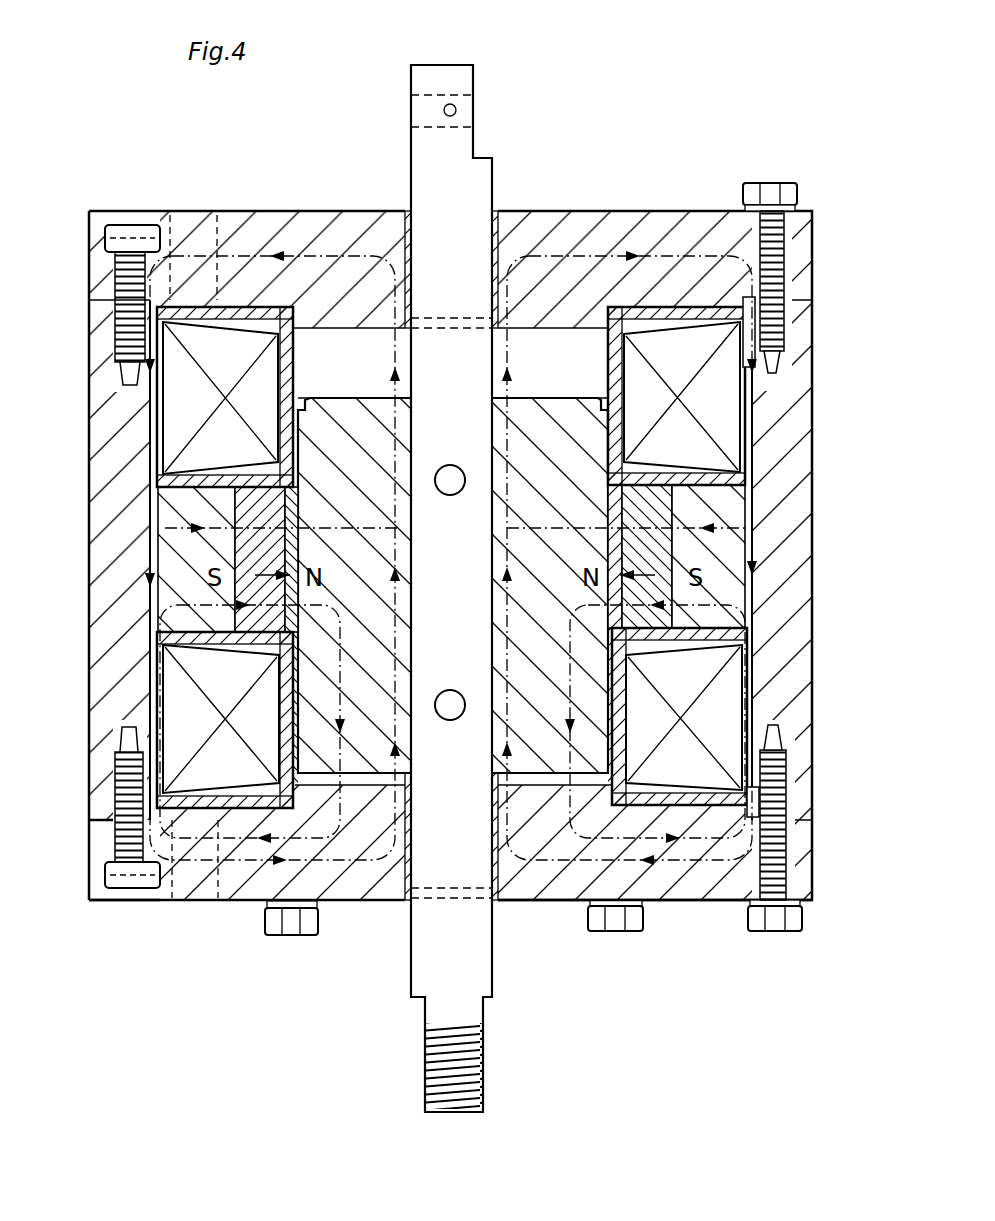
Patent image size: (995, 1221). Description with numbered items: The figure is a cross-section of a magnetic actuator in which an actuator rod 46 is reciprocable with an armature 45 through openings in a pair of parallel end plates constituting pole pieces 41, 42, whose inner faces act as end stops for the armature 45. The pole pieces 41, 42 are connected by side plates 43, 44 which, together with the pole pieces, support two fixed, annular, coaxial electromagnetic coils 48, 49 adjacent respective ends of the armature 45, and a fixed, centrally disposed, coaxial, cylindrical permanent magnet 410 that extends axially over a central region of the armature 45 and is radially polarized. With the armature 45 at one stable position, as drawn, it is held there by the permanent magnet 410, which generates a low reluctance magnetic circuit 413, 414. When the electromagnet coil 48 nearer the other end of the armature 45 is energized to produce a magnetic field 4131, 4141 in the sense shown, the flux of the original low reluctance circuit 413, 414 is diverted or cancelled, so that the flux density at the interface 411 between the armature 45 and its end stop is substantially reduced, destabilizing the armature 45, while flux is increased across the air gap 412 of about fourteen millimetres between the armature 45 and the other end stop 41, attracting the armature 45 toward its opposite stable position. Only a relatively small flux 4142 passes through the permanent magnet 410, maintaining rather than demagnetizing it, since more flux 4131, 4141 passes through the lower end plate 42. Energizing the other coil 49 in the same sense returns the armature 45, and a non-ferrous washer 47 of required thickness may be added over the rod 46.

The pole piece 41 is at (100, 268).
The pole piece 42 is at (105, 852).
The side plate 43 is at (115, 555).
The side plate 44 is at (795, 572).
The armature 45 is at (540, 396).
The actuator rod 46 is at (425, 986).
The non-ferrous washer 47 is at (583, 330).
The electromagnetic coil 48 is at (730, 405).
The electromagnetic coil 49 is at (730, 712).
The permanent magnet 410 is at (248, 628).
The interface 411 is at (340, 788).
The air gap 412 is at (340, 355).
The low reluctance magnetic circuit 413 is at (752, 512).
The magnetic field 4131 is at (684, 860).
The low reluctance magnetic circuit 414 is at (200, 842).
The magnetic field 4141 is at (150, 608).
The magnetic flux 4142 is at (172, 528).